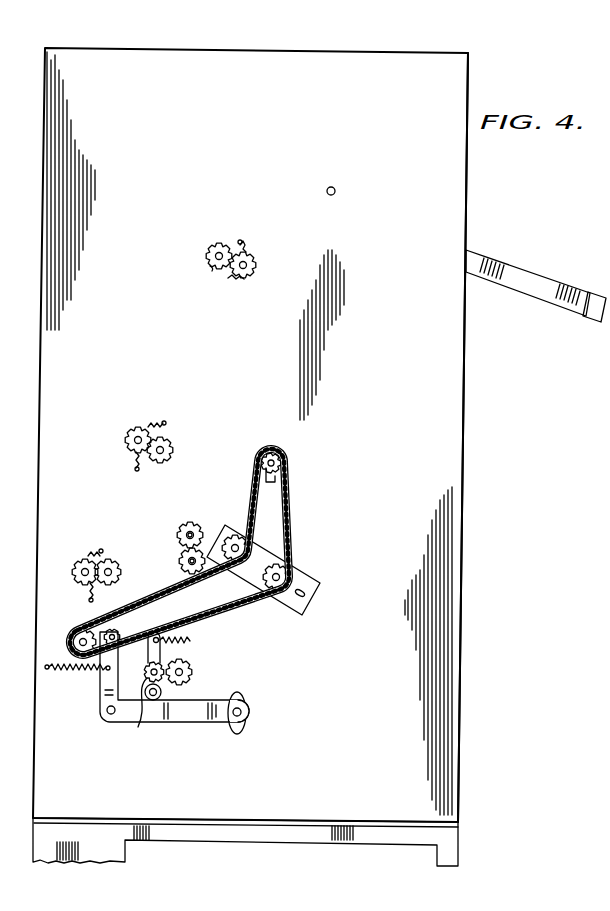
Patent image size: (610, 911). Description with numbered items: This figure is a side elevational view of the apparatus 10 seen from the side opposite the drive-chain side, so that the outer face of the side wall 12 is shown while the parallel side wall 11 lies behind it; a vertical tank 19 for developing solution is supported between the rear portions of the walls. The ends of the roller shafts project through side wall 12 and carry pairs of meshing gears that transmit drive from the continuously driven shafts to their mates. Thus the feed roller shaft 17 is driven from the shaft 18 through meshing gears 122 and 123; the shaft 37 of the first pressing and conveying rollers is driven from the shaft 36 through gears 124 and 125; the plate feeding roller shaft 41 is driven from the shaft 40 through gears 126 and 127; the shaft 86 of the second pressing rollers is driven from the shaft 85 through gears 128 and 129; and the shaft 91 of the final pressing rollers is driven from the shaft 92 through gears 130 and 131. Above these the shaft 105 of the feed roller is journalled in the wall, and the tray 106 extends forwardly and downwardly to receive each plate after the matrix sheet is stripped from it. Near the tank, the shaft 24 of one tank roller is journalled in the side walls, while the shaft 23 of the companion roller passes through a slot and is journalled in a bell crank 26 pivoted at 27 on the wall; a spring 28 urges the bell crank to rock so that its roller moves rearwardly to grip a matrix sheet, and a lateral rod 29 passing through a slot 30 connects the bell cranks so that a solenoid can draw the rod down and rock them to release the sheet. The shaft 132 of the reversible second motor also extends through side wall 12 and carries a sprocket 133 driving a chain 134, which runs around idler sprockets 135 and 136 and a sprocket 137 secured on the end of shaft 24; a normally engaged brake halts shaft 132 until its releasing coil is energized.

The apparatus 10 is at (1, 197).
The side wall 11 is at (40, 462).
The side wall 12 is at (460, 417).
The vertical tank 19 is at (122, 848).
The shaft 105 is at (335, 189).
The tray 106 is at (538, 292).
The shaft 92 is at (221, 247).
The shaft 91 is at (255, 262).
The gear 131 is at (211, 267).
The gear 130 is at (251, 278).
The shaft 86 is at (129, 455).
The shaft 85 is at (172, 443).
The gear 129 is at (136, 428).
The gear 128 is at (172, 457).
The shaft 37 is at (80, 560).
The shaft 36 is at (112, 563).
The gear 124 is at (108, 560).
The gear 125 is at (75, 581).
The gear 122 is at (180, 530).
The shaft 17 is at (195, 524).
The gear 123 is at (180, 562).
The shaft 18 is at (181, 571).
The chain 134 is at (287, 523).
The idler sprocket 135 is at (232, 535).
The idler sprocket 136 is at (287, 565).
The shaft 132 is at (282, 466).
The sprocket 133 is at (276, 481).
The shaft 24 is at (73, 636).
The shaft 23 is at (120, 636).
The sprocket 137 is at (88, 626).
The bell crank 26 is at (100, 701).
The slot 30 is at (243, 698).
The lateral rod 29 is at (244, 712).
The pivot 27 is at (111, 716).
The spring 28 is at (68, 673).
The shaft 41 is at (163, 658).
The shaft 40 is at (192, 670).
The gear 126 is at (162, 690).
The gear 127 is at (138, 694).